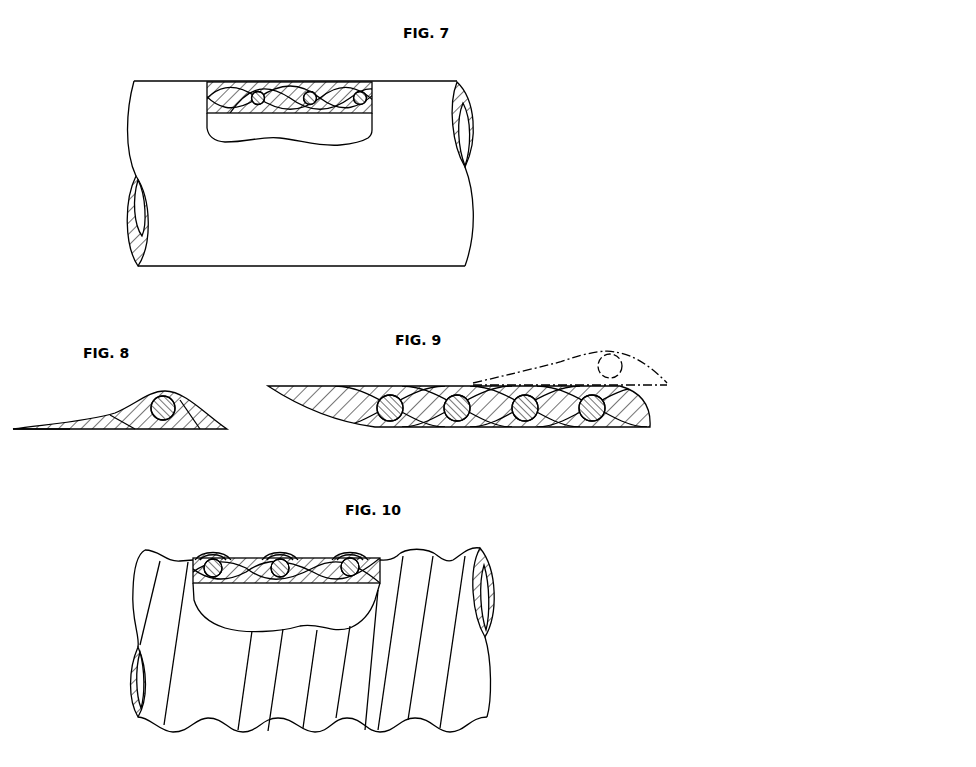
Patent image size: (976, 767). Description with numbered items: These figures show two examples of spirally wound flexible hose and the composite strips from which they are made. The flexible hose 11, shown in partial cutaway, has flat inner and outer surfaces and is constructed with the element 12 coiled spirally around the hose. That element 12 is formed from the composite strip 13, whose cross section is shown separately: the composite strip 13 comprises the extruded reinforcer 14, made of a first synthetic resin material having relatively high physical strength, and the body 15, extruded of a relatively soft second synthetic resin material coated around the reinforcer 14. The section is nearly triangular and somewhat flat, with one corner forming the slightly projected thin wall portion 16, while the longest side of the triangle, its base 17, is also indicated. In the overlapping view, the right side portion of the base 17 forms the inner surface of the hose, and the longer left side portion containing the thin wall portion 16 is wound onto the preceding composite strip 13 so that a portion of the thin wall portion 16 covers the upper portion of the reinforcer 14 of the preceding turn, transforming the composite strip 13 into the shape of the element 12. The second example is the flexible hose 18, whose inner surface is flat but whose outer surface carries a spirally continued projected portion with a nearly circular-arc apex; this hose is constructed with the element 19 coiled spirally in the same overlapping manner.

In FIG. 7, the flexible hose 11 is at (133, 128).
In FIG. 7, the element 12 is at (243, 83).
In FIG. 9, the element 12 is at (620, 418).
In FIG. 8, the composite strip 13 is at (202, 466).
In FIG. 9, the composite strip 13 is at (590, 362).
In FIG. 8, the reinforcer 14 is at (159, 430).
In FIG. 8, the body 15 is at (126, 430).
In FIG. 8, the thin wall portion 16 is at (58, 430).
In FIG. 8, the base 17 is at (189, 430).
In FIG. 10, the flexible hose 18 is at (155, 616).
In FIG. 10, the element 19 is at (305, 562).